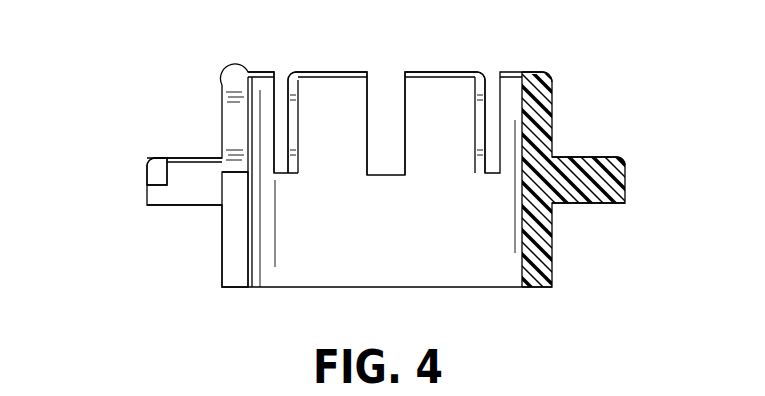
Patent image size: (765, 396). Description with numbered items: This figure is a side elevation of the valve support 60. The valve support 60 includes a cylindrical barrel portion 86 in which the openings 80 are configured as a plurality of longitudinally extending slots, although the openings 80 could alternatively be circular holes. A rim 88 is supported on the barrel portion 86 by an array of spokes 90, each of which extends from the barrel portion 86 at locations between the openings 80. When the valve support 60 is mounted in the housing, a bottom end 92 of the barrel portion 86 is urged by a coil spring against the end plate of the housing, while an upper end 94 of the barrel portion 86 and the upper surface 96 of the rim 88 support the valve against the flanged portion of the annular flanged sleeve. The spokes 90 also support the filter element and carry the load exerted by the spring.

The valve support 60 is at (212, 108).
The openings 80 is at (282, 78).
The cylindrical barrel portion 86 is at (242, 242).
The rim 88 is at (160, 158).
The spokes 90 is at (187, 190).
The bottom end 92 is at (530, 288).
The upper end 94 is at (533, 77).
The upper surface 96 is at (148, 160).